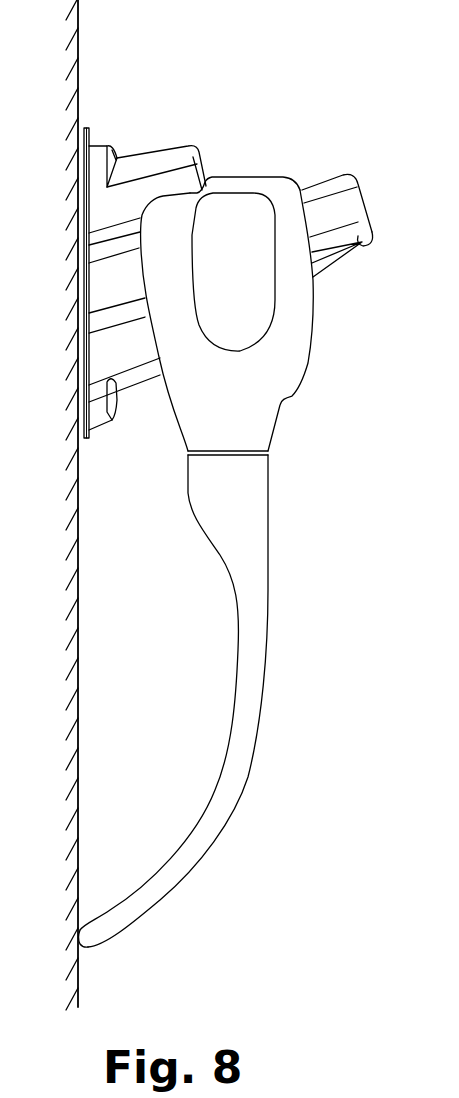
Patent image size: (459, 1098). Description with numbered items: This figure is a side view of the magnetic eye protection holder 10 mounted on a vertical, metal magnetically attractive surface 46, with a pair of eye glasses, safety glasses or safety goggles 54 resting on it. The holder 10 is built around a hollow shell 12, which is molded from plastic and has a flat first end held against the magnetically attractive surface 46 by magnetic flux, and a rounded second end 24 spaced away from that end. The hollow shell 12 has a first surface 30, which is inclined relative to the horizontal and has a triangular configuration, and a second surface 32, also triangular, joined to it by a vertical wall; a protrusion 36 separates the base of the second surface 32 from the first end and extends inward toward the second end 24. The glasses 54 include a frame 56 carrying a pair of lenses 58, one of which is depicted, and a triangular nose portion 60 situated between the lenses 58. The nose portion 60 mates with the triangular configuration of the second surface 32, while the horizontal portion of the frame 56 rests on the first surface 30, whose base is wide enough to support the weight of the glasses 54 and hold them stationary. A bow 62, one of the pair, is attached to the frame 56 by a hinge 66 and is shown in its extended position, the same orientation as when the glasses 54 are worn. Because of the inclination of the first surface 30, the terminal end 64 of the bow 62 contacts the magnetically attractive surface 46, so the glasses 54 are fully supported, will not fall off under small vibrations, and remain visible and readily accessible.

The magnetic eye protection holder 10 is at (357, 73).
The hollow shell 12 is at (333, 258).
The second end 24 is at (364, 208).
The first surface 30 is at (312, 184).
The second surface 32 is at (162, 150).
The protrusion 36 is at (108, 146).
The magnetically attractive surface 46 is at (78, 633).
The pair of eye glasses, safety glasses or safety goggles 54 is at (306, 376).
The frame 56 is at (272, 185).
The lens 58 is at (242, 204).
The triangular nose portion 60 is at (201, 158).
The bow 62 is at (252, 727).
The terminal end 64 is at (80, 940).
The hinge 66 is at (252, 456).